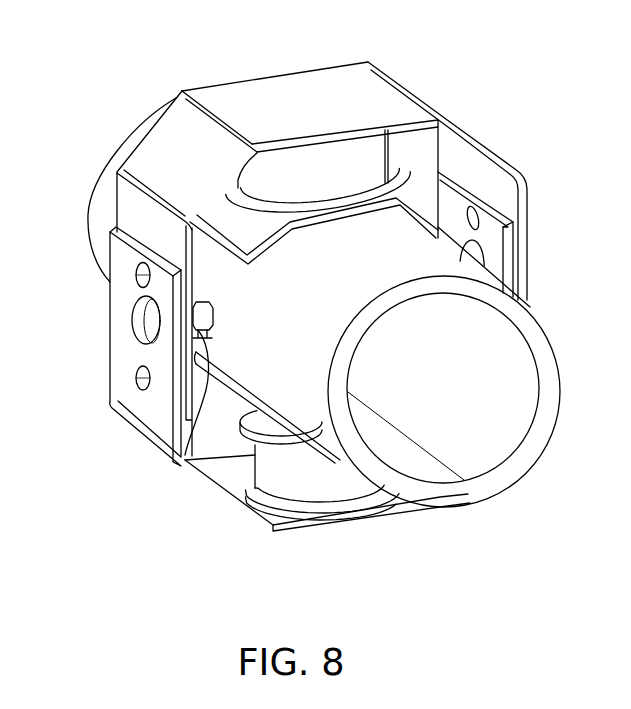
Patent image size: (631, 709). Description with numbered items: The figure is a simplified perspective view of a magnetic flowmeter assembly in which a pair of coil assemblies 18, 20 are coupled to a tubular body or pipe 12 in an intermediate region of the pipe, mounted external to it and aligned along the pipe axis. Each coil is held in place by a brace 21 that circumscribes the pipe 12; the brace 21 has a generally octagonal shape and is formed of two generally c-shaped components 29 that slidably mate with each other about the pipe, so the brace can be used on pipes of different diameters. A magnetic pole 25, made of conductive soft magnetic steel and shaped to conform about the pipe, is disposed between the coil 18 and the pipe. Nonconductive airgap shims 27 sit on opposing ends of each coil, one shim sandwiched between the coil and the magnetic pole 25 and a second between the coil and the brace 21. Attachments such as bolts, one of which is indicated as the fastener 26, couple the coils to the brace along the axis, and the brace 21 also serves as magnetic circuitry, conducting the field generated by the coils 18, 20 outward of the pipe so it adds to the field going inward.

The tubular body 12 is at (547, 375).
The coil assembly 18 is at (370, 155).
The coil assembly 20 is at (330, 487).
The brace 21 is at (521, 203).
The magnetic pole 25 is at (233, 232).
The nut / fastener 26 is at (194, 420).
The airgap shim 27 is at (238, 440).
The c-shaped component 29 is at (158, 142).